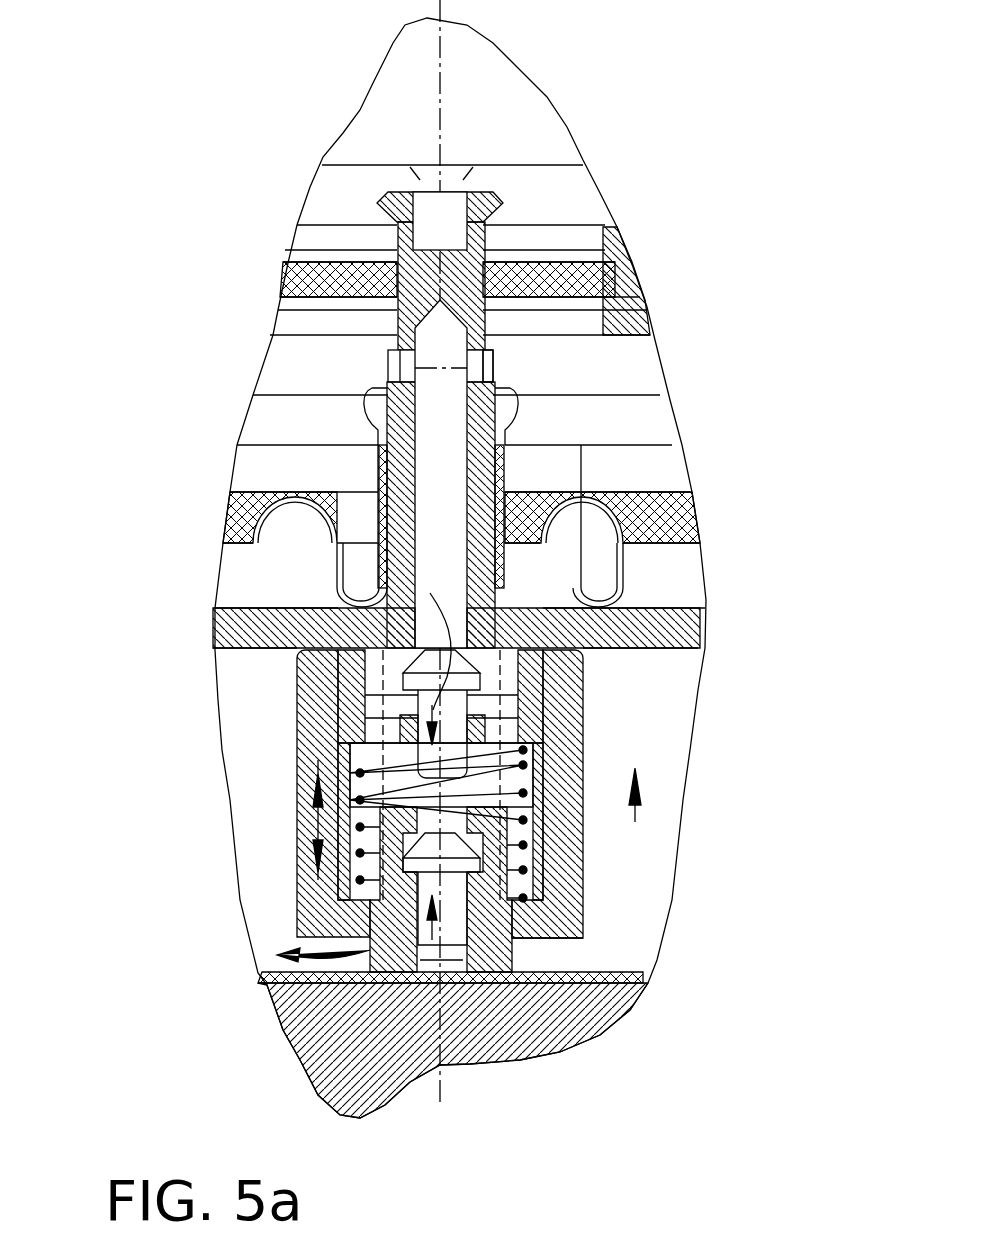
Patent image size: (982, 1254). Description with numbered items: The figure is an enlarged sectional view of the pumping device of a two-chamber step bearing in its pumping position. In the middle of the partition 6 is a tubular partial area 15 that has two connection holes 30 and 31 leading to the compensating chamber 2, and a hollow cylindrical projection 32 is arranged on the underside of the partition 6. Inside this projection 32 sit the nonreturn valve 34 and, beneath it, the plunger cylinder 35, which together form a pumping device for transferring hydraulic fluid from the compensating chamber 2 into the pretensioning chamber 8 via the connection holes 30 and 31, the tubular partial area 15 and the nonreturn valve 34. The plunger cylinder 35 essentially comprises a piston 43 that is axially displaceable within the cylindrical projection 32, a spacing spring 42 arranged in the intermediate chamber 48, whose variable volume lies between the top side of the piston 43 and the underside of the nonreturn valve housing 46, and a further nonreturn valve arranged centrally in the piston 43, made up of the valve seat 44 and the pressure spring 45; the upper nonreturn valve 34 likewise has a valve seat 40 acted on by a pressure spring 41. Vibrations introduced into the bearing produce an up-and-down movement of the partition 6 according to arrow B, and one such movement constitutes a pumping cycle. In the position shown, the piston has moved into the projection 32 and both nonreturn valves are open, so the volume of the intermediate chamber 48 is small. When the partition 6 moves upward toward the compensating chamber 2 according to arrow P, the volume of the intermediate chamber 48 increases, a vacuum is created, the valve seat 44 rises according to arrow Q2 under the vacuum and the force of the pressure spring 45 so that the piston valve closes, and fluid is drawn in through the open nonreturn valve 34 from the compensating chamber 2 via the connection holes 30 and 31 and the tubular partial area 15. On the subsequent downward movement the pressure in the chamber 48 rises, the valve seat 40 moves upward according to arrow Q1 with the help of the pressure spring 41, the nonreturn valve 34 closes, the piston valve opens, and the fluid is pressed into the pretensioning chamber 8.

The compensating chamber 2 is at (612, 415).
The partition 6 is at (657, 630).
The pretensioning chamber 8 is at (637, 945).
The tubular partial area 15 is at (453, 488).
The connection hole 30 is at (403, 368).
The connection hole 31 is at (483, 368).
The hollow cylindrical projection 32 is at (317, 747).
The nonreturn valve 34 is at (453, 723).
The plunger cylinder 35 is at (527, 920).
The valve seat 40 is at (422, 668).
The pressure spring 41 is at (420, 698).
The spacing spring 42 is at (360, 827).
The piston 43 is at (263, 985).
The valve seat 44 is at (452, 848).
The pressure spring 45 is at (414, 882).
The nonreturn valve housing 46 is at (352, 720).
The intermediate chamber 48 is at (531, 750).
The arrow P is at (643, 805).
The arrow B is at (313, 815).
The arrow Q1 is at (430, 593).
The arrow Q2 is at (420, 1000).